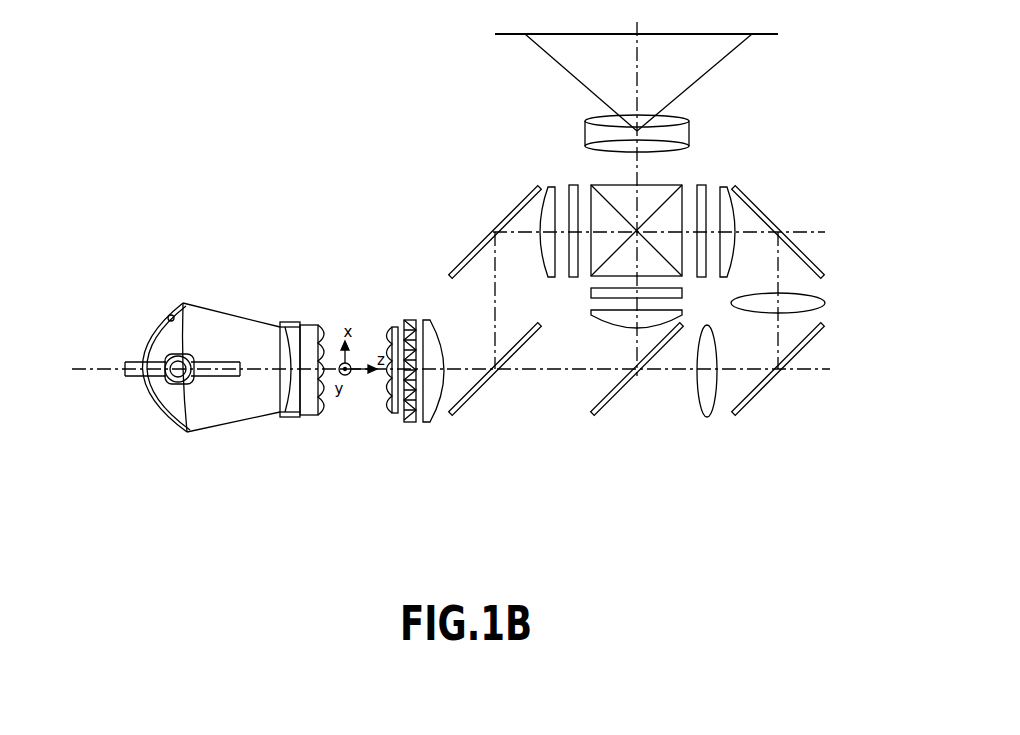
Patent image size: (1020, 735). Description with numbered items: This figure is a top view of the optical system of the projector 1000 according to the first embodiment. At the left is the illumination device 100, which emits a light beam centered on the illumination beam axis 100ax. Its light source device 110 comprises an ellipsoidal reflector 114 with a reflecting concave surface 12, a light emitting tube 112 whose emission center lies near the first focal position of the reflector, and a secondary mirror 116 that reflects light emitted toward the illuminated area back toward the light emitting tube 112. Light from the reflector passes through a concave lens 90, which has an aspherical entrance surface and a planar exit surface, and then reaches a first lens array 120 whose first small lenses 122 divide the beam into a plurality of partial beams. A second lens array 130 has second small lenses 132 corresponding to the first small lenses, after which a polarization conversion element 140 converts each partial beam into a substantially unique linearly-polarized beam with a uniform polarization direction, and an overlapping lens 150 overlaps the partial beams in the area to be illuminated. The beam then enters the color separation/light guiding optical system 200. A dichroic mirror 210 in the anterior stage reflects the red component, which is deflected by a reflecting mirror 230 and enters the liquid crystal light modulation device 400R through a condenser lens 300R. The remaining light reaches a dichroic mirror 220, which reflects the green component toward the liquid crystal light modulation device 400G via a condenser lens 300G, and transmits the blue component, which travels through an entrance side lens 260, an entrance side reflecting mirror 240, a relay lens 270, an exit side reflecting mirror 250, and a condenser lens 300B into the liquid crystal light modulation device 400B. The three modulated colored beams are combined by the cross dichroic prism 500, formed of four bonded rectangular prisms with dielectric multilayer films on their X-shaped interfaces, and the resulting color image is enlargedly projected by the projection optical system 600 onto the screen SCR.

The projector 1000 is at (322, 163).
The illumination beam axis 100ax is at (101, 371).
The reflecting concave surface 12 is at (168, 317).
The light source device 110 is at (128, 474).
The light emitting tube 112 is at (183, 422).
The ellipsoidal reflector 114 is at (163, 421).
The secondary mirror 116 is at (203, 386).
The concave lens 90 is at (290, 419).
The illumination device 100 is at (498, 508).
The first lens array 120 is at (318, 417).
The first small lenses 122 is at (322, 326).
The second lens array 130 is at (390, 419).
The second small lenses 132 is at (389, 326).
The polarization conversion element 140 is at (411, 424).
The overlapping lens 150 is at (434, 424).
The color separation/light guiding optical system 200 is at (645, 497).
The dichroic mirror 210 is at (476, 405).
The dichroic mirror 220 is at (617, 405).
The reflecting mirror 230 is at (474, 240).
The entrance side reflecting mirror 240 is at (760, 405).
The exit side reflecting mirror 250 is at (776, 218).
The entrance side lens 260 is at (707, 416).
The relay lens 270 is at (826, 304).
The condenser lens 300R is at (548, 188).
The liquid crystal light modulation device 400R is at (572, 184).
The cross dichroic prism 500 is at (598, 182).
The liquid crystal light modulation device 400B is at (704, 184).
The condenser lens 300B is at (730, 190).
The liquid crystal light modulation device 400G is at (591, 292).
The condenser lens 300G is at (591, 316).
The projection optical system 600 is at (690, 128).
The screen SCR is at (763, 36).